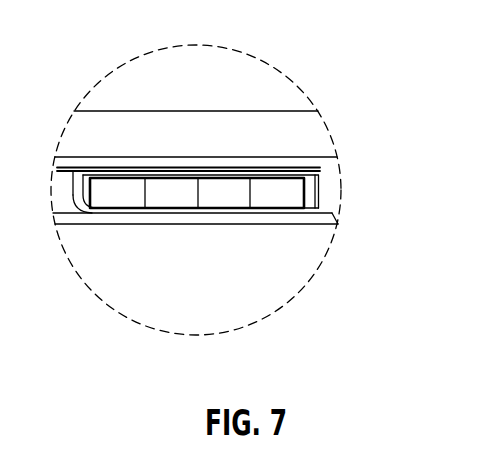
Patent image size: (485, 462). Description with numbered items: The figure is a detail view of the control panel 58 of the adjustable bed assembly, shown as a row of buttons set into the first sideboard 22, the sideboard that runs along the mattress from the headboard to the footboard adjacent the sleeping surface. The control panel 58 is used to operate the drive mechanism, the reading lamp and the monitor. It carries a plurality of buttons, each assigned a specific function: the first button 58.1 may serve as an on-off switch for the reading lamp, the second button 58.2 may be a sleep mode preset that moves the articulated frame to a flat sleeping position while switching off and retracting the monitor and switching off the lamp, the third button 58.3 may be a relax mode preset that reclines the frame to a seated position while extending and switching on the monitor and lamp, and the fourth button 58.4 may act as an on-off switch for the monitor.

The first sideboard 22 is at (296, 122).
The control panel 58 is at (275, 242).
The first button 58.1 is at (288, 195).
The second button 58.2 is at (238, 202).
The third button 58.3 is at (158, 187).
The fourth button 58.4 is at (105, 202).